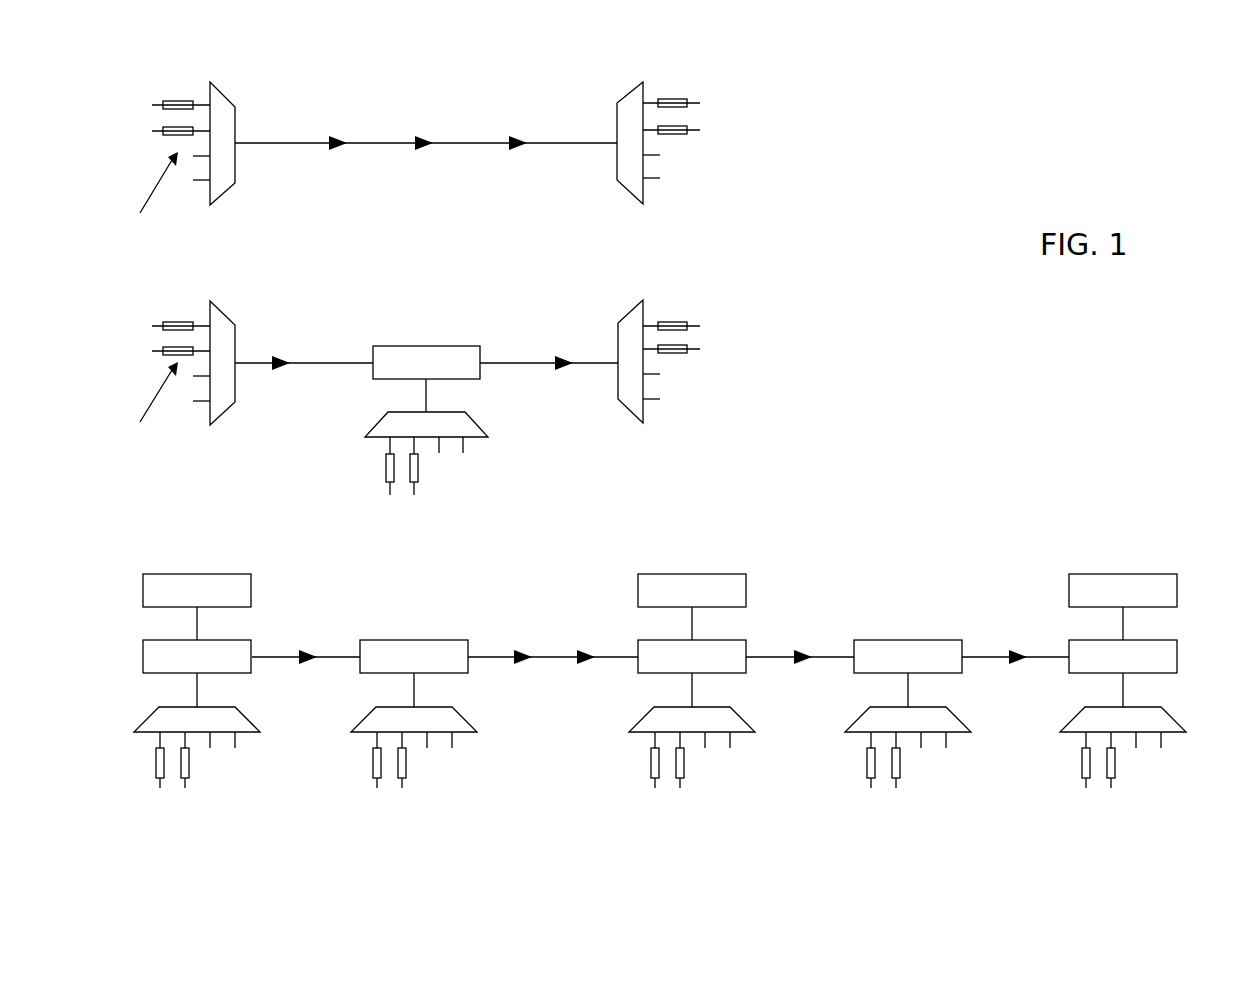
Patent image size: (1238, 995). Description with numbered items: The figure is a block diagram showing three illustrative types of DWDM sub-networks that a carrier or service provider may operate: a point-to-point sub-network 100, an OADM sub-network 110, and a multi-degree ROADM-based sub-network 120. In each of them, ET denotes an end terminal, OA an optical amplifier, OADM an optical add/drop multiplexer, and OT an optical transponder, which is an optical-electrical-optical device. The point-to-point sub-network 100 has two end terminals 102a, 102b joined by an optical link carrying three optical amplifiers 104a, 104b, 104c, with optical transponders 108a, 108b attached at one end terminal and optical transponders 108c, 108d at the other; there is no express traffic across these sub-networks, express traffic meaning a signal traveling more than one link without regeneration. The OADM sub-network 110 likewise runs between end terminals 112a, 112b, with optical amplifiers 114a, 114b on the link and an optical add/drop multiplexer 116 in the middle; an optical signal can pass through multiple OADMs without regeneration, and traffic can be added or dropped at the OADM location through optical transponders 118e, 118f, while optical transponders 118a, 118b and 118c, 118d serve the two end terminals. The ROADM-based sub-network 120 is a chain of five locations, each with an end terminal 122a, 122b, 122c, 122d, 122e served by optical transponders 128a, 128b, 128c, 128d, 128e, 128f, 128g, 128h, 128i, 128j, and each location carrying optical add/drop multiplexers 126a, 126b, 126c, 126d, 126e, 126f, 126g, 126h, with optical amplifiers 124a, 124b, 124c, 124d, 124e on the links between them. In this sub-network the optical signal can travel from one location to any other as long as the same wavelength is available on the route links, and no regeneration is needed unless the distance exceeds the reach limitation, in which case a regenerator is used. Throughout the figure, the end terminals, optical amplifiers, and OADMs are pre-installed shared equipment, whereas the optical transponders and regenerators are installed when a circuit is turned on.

The point-to-point DWDM sub-network 100 is at (354, 90).
The end terminal 102a is at (235, 162).
The end terminal 102b is at (617, 195).
The optical amplifier 104a is at (337, 150).
The optical amplifier 104b is at (425, 150).
The optical amplifier 104c is at (517, 132).
The optical transponder 108a is at (178, 101).
The optical transponder 108b is at (166, 127).
The optical transponder 108c is at (687, 99).
The optical transponder 108d is at (672, 134).
The OADM sub-network 110 is at (676, 276).
The end terminal 112a is at (228, 315).
The end terminal 112b is at (630, 415).
The optical amplifier 114a is at (282, 355).
The optical amplifier 114b is at (563, 350).
The optical add/drop multiplexer 116 is at (428, 346).
The optical transponder 118a is at (178, 322).
The optical transponder 118b is at (166, 347).
The optical transponder 118c is at (690, 322).
The optical transponder 118d is at (675, 355).
The optical transponder 118e is at (386, 468).
The optical transponder 118f is at (418, 468).
The multi-degree ROADM-based DWDM sub-network 120 is at (931, 511).
The end terminal 122a is at (257, 733).
The end terminal 122b is at (474, 733).
The end terminal 122c is at (752, 733).
The end terminal 122d is at (968, 733).
The end terminal 122e is at (1183, 733).
The optical amplifier 124a is at (307, 645).
The optical amplifier 124b is at (520, 645).
The optical amplifier 124c is at (583, 645).
The optical amplifier 124d is at (802, 645).
The optical amplifier 124e is at (1017, 645).
The optical add/drop multiplexer 126a is at (252, 590).
The optical add/drop multiplexer 126b is at (143, 657).
The optical add/drop multiplexer 126c is at (414, 640).
The optical add/drop multiplexer 126d is at (670, 574).
The optical add/drop multiplexer 126e is at (735, 640).
The optical add/drop multiplexer 126f is at (898, 640).
The optical add/drop multiplexer 126g is at (1110, 574).
The optical add/drop multiplexer 126h is at (1165, 640).
The optical transponder 128a is at (156, 760).
The optical transponder 128b is at (190, 762).
The optical transponder 128c is at (373, 760).
The optical transponder 128d is at (407, 762).
The optical transponder 128e is at (651, 760).
The optical transponder 128f is at (685, 762).
The optical transponder 128g is at (867, 760).
The optical transponder 128h is at (901, 762).
The optical transponder 128i is at (1082, 760).
The optical transponder 128j is at (1116, 762).